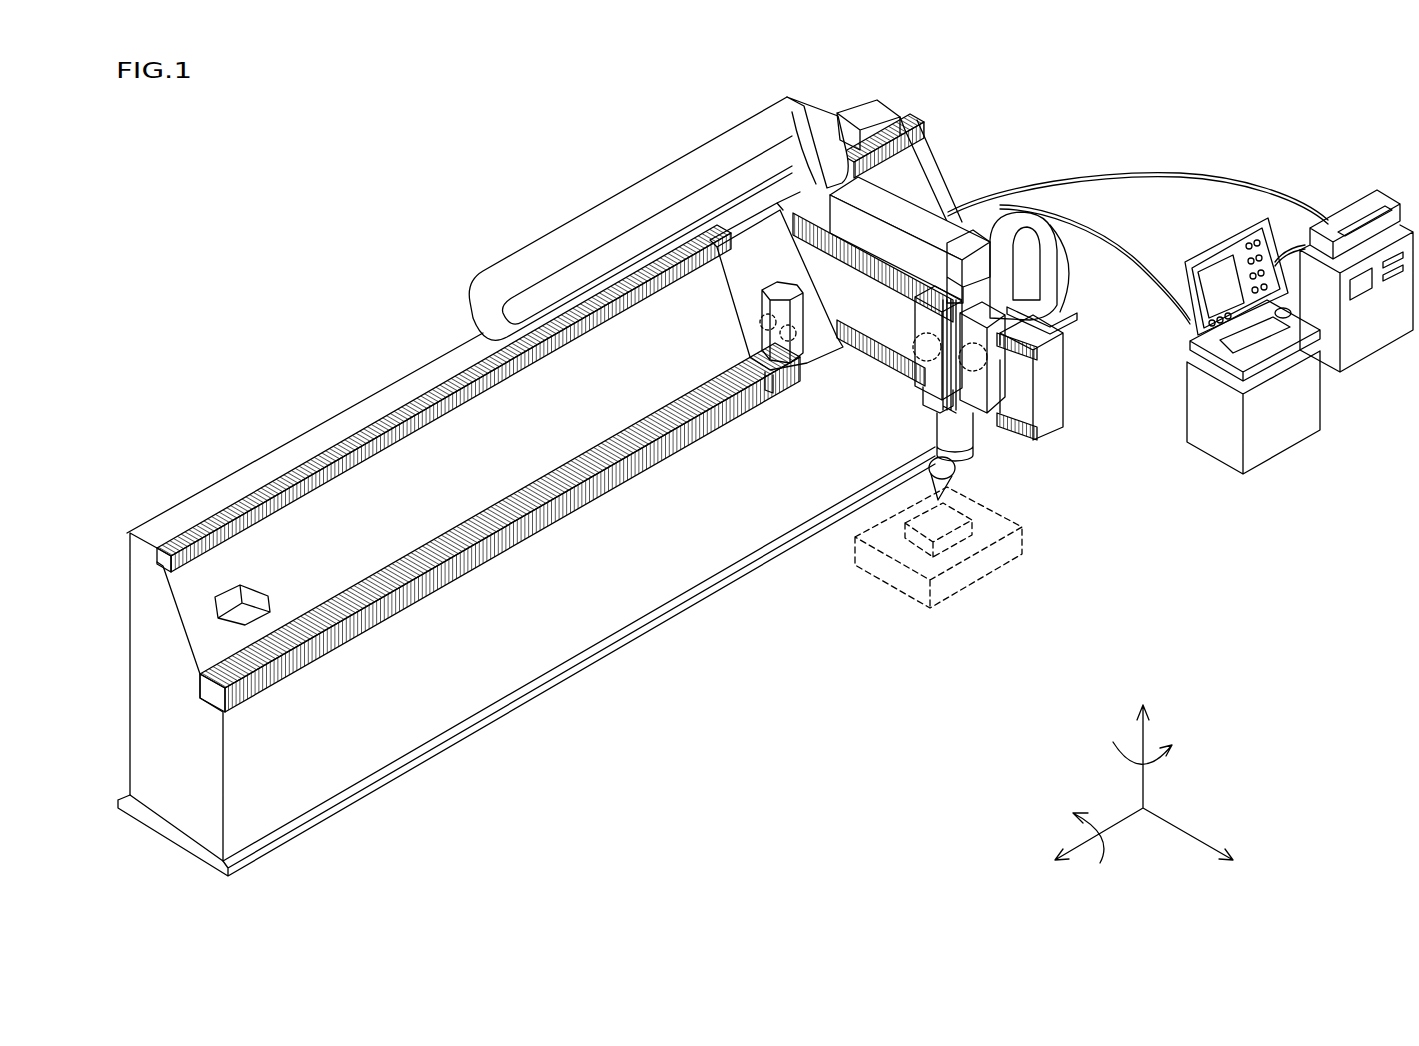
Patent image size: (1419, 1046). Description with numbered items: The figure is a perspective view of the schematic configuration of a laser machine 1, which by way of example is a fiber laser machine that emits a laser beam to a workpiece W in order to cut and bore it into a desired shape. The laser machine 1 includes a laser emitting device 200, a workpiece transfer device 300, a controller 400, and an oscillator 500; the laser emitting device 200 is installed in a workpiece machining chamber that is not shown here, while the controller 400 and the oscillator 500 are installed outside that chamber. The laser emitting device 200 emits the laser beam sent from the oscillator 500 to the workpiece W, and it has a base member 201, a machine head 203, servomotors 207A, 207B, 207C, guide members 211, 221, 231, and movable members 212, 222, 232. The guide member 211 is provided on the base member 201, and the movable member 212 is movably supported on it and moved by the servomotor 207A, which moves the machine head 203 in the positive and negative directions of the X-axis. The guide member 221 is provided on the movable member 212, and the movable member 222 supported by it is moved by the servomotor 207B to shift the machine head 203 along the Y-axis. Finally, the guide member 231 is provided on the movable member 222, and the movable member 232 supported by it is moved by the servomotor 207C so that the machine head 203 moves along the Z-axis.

The laser machine 1 is at (1291, 70).
The laser emitting device 200 is at (981, 113).
The base member 201 is at (465, 690).
The machine head 203 is at (952, 488).
The servomotor 207A is at (762, 306).
The servomotor 207B is at (1036, 357).
The servomotor 207C is at (1020, 396).
The guide member 211 is at (566, 522).
The movable member 212 is at (846, 365).
The guide member 221 is at (838, 350).
The movable member 222 is at (990, 350).
The guide member 231 is at (950, 405).
The movable member 232 is at (968, 445).
The workpiece transfer device 300 is at (1015, 548).
The workpiece W is at (985, 528).
The controller 400 is at (1283, 432).
The oscillator 500 is at (1380, 337).